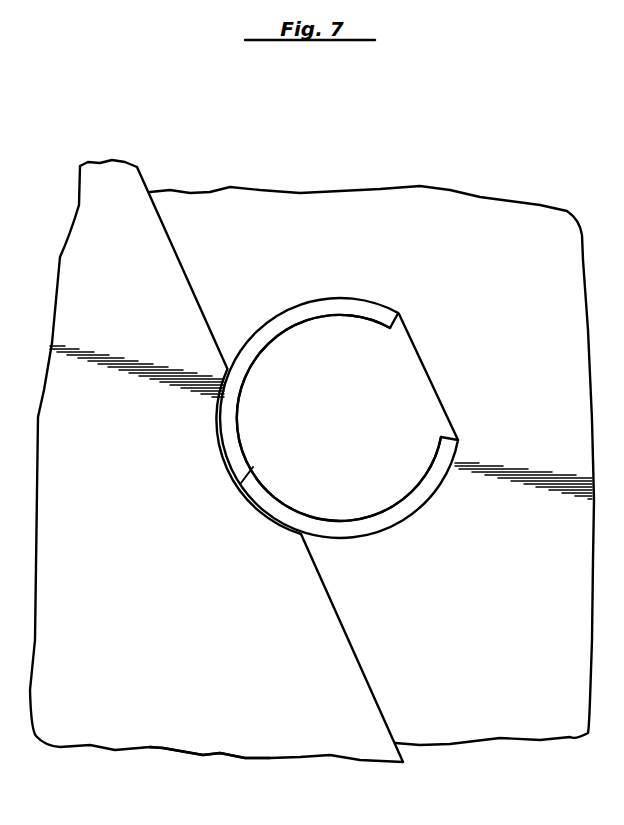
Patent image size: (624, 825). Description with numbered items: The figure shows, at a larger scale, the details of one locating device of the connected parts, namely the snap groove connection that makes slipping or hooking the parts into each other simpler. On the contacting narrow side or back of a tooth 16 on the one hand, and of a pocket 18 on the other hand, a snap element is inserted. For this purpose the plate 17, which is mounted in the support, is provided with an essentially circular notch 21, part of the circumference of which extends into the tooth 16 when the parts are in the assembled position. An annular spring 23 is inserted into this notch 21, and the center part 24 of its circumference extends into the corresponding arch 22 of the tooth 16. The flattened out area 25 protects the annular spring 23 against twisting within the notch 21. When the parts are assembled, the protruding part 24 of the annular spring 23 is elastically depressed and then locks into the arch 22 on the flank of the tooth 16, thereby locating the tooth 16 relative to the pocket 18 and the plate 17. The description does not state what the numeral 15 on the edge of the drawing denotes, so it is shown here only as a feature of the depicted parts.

The bottom edge of plate 15 is at (224, 762).
The tooth 16 is at (163, 730).
The plate 17 is at (481, 194).
The pocket 18 is at (358, 642).
The notch 21 is at (278, 322).
The arch 22 is at (253, 467).
The annular spring 23 is at (361, 285).
The center part of the circumference 24 is at (254, 511).
The flattened out area 25 is at (426, 390).